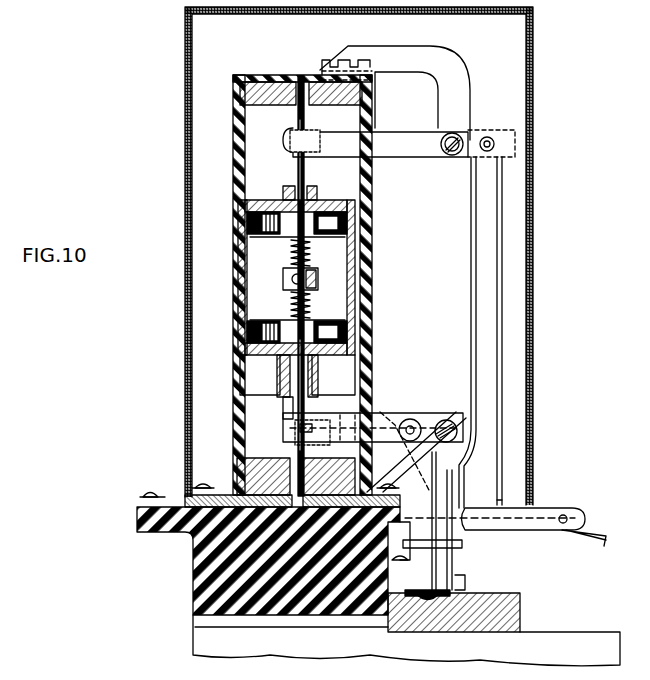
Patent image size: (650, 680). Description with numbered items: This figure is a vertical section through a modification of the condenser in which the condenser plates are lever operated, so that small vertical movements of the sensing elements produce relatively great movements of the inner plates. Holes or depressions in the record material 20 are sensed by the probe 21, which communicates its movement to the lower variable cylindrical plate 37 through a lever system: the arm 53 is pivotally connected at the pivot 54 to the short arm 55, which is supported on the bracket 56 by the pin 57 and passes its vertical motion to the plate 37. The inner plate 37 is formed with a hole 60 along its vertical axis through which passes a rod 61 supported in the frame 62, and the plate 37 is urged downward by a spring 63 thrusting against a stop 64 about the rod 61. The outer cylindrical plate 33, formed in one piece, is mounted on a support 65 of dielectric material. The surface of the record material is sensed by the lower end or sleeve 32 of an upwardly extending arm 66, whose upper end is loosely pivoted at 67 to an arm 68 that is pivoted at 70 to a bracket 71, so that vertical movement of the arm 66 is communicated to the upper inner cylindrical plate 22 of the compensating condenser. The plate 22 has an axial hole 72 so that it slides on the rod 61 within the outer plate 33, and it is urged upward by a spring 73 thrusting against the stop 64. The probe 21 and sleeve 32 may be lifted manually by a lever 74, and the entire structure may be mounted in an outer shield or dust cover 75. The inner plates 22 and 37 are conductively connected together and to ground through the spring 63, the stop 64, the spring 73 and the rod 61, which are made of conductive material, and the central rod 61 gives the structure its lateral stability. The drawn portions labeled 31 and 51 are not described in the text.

The record material 20 is at (584, 530).
The sensing pin 21 is at (431, 576).
The inner cylindrical plate 22 is at (258, 238).
The seat 31 is at (406, 596).
The sleeve 32 is at (452, 584).
The outer cylindrical plate 33 is at (250, 200).
The lower variable cylindrical plate 37 is at (262, 356).
The bushing 51 is at (318, 395).
The arm 53 is at (464, 500).
The pivot 54 is at (416, 420).
The short arm 55 is at (376, 420).
The bracket 56 is at (315, 424).
The pin 57 is at (448, 418).
The hole 60 is at (286, 398).
The rod 61 is at (300, 112).
The frame 62 is at (266, 85).
The spring 63 is at (290, 298).
The stop 64 is at (312, 296).
The support 65 is at (240, 203).
The arm 66 is at (492, 355).
The pivot 67 is at (489, 137).
The arm 68 is at (394, 150).
The pivot 70 is at (450, 156).
The bracket 71 is at (462, 82).
The axial hole 72 is at (283, 190).
The spring 73 is at (306, 272).
The lever 74 is at (536, 508).
The dust cover 75 is at (197, 124).